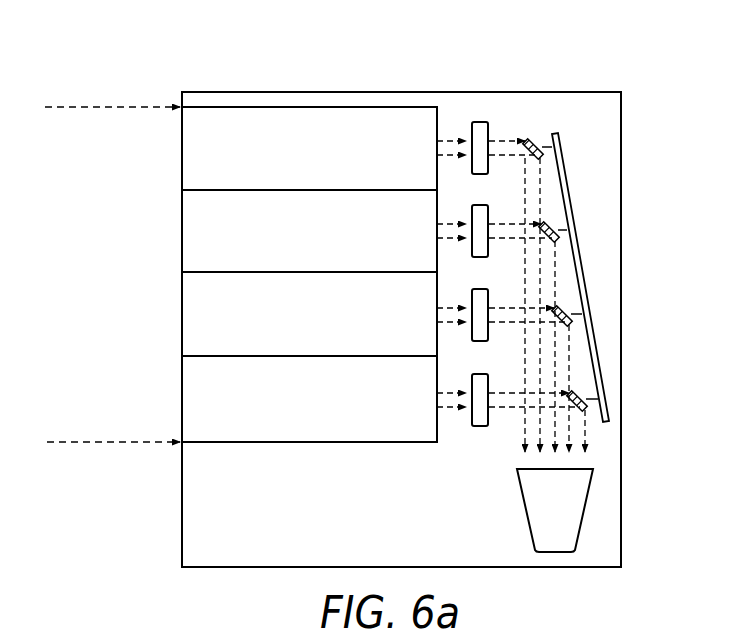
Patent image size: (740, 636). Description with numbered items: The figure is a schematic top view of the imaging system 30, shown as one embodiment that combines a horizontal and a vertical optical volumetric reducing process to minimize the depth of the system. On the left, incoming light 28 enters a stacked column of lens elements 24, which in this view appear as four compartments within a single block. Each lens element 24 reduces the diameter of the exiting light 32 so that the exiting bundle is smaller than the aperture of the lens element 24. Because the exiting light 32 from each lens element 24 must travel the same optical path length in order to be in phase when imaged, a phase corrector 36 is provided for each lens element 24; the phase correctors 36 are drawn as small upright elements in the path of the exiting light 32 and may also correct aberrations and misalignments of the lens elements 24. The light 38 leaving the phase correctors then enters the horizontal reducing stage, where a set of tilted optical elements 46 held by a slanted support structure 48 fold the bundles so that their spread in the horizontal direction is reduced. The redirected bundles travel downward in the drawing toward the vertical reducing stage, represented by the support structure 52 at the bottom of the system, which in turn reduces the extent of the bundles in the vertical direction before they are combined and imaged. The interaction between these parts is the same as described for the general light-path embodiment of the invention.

The lens element 24 is at (242, 120).
The incoming light 28 is at (100, 107).
The imaging system 30 is at (350, 92).
The exiting light 32 is at (460, 141).
The phase corrector 36 is at (480, 427).
The light 38 is at (514, 141).
The optical element 46 is at (530, 140).
The support structure 48 is at (578, 245).
The support structure 52 is at (583, 497).